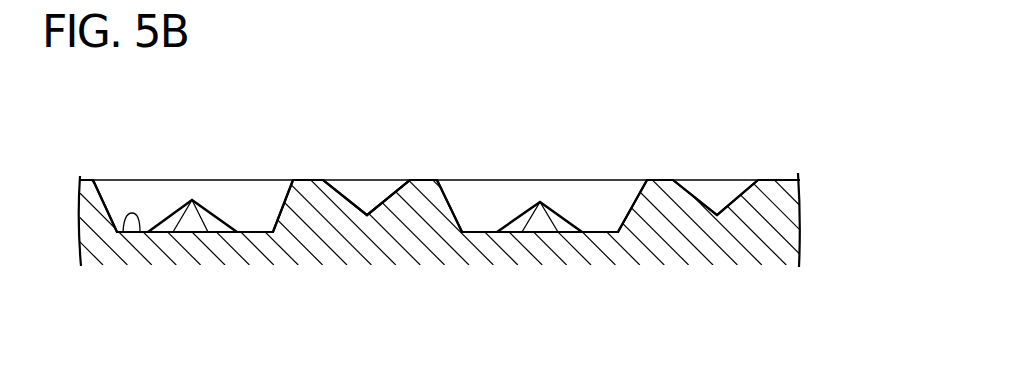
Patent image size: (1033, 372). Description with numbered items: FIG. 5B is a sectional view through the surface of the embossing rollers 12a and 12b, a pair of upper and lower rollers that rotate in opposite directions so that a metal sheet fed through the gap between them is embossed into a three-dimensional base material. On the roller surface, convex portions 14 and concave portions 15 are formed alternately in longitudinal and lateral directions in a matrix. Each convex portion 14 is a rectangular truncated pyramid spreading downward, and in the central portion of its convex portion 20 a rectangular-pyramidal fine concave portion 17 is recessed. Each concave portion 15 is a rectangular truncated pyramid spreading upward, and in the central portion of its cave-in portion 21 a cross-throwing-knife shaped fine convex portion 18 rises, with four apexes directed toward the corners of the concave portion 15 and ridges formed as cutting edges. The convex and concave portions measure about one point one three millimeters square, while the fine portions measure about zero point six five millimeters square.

The upper embossing roller 12a is at (433, 160).
The lower embossing roller 12b is at (433, 218).
The convex portion 14 is at (382, 162).
The concave portion 15 is at (148, 170).
The fine concave portion 17 is at (360, 190).
The fine convex portion 18 is at (217, 212).
The convex portion (top face of convex portion) 20 is at (425, 180).
The cave-in portion 21 is at (125, 232).